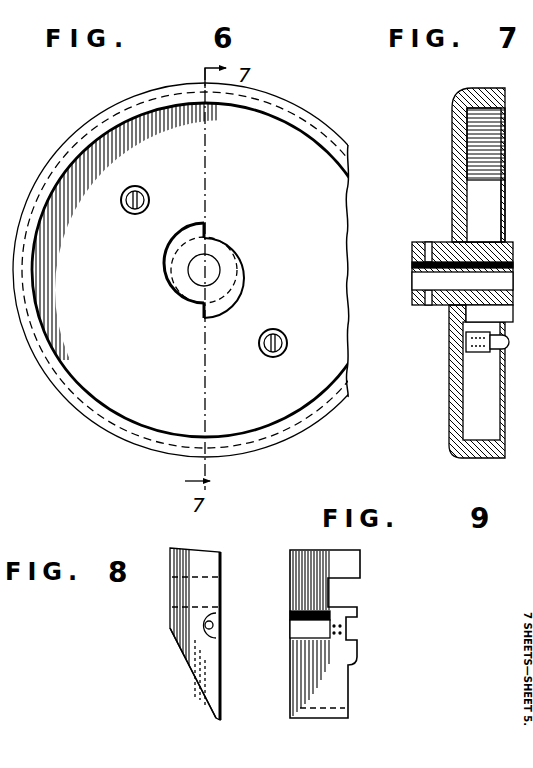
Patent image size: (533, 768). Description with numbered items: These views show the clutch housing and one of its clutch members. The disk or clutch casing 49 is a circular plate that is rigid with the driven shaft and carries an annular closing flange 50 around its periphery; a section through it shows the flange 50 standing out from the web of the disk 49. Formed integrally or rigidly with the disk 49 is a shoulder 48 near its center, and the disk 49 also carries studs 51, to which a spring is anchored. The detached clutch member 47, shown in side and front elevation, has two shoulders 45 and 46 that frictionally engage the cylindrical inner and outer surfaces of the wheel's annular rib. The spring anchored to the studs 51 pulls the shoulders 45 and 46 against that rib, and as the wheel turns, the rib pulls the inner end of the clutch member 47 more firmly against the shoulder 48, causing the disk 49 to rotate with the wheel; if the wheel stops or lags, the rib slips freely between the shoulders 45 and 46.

In FIG. 8, the shoulder 45 is at (214, 576).
In FIG. 9, the shoulder 45 is at (342, 585).
In FIG. 8, the shoulder 46 is at (172, 616).
In FIG. 9, the shoulder 46 is at (348, 608).
In FIG. 8, the clutch member 47 is at (197, 650).
In FIG. 9, the clutch member 47 is at (335, 680).
In FIG. 6, the shoulder 48 is at (213, 238).
In FIG. 6, the disk or clutch casing 49 is at (124, 236).
In FIG. 7, the disk or clutch casing 49 is at (452, 181).
In FIG. 6, the annular closing flange 50 is at (92, 405).
In FIG. 7, the annular closing flange 50 is at (480, 92).
In FIG. 6, the studs 51 is at (145, 213).
In FIG. 7, the studs 51 is at (492, 352).